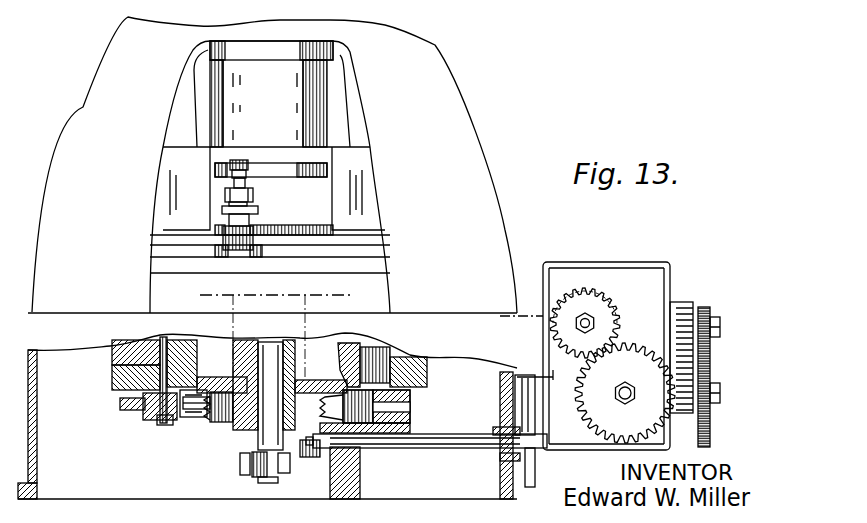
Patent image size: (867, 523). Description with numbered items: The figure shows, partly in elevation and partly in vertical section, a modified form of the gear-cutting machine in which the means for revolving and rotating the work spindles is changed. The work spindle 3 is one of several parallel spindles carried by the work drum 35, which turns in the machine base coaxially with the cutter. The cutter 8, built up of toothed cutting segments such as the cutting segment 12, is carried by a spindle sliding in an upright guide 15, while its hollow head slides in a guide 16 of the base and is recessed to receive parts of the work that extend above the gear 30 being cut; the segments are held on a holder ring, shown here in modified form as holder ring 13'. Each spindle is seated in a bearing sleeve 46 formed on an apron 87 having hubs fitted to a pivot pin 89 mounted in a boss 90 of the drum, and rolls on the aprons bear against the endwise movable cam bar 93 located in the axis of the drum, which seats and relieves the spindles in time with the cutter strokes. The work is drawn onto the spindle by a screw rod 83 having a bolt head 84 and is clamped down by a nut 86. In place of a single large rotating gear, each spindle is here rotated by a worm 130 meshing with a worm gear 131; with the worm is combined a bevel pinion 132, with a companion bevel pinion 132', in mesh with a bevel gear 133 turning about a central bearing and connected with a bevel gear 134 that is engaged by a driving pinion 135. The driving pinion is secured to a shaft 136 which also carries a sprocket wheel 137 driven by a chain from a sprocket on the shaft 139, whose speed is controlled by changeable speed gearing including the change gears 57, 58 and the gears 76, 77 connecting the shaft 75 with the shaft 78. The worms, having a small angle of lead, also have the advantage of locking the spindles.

The work spindle 3 is at (123, 390).
The cutter 8 is at (287, 227).
The cutting segment 12 is at (110, 387).
The cylinder liner 13' is at (319, 103).
The upright guide 15 is at (348, 173).
The guide 16 is at (357, 135).
The gear 30 is at (248, 227).
The work drum 35 is at (115, 353).
The bearing sleeve 46 is at (115, 372).
The change gear 57 is at (705, 312).
The change gear 58 is at (712, 370).
The shaft 75 is at (632, 395).
The gear 76 is at (617, 367).
The gear 77 is at (603, 318).
The shaft 78 is at (595, 313).
The screw rod 83 is at (160, 423).
The bolt head 84 is at (166, 427).
The nut 86 is at (247, 173).
The apron 87 is at (345, 347).
The pivot pin 89 is at (377, 357).
The boss 90 is at (367, 345).
The bar 93 is at (270, 358).
The worm 130 is at (363, 423).
The worm gear 131 is at (133, 410).
The bevel pinion 132 is at (321, 373).
The pin 132' is at (207, 379).
The bevel gear 133 is at (230, 430).
The bevel gear 134 is at (213, 427).
The driving pinion 135 is at (322, 457).
The shaft 136 is at (447, 443).
The sprocket wheel 137 is at (533, 473).
The shaft 139 is at (536, 403).